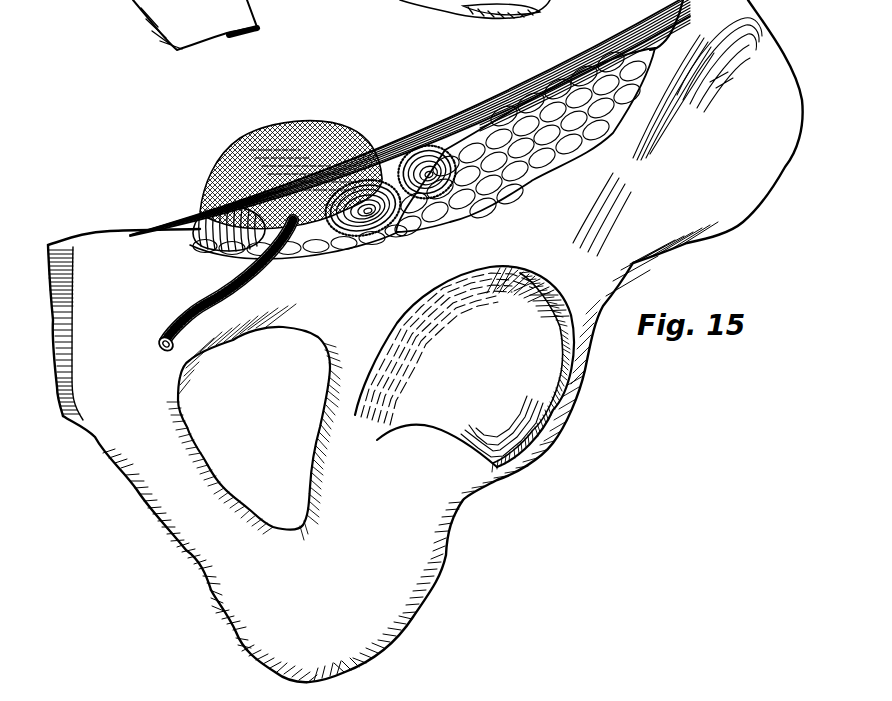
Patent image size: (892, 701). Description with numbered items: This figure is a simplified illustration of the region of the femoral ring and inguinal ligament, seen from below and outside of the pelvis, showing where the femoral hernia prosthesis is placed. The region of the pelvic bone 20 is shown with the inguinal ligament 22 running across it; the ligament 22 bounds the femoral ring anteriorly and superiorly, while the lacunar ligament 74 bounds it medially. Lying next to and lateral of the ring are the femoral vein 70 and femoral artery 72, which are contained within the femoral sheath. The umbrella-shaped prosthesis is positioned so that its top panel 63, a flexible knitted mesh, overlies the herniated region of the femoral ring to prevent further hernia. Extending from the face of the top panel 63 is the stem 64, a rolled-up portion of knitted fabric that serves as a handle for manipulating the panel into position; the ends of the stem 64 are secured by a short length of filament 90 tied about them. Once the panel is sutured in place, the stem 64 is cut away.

The pelvic bone 20 is at (368, 304).
The inguinal ligament 22 is at (494, 104).
The top panel 63 is at (258, 148).
The stem 64 is at (187, 310).
The femoral vein 70 is at (390, 180).
The femoral artery 72 is at (417, 148).
The lacunar ligament 74 is at (223, 207).
The filament 90 is at (177, 321).